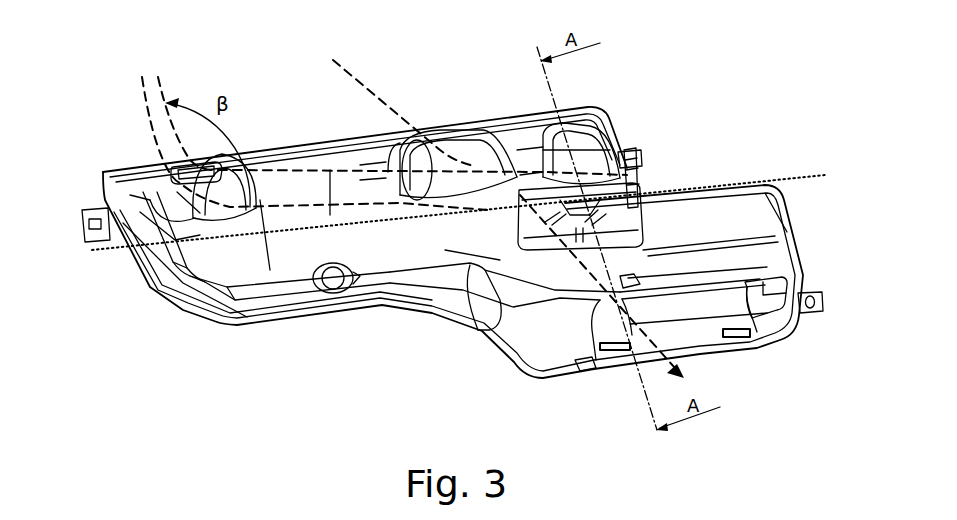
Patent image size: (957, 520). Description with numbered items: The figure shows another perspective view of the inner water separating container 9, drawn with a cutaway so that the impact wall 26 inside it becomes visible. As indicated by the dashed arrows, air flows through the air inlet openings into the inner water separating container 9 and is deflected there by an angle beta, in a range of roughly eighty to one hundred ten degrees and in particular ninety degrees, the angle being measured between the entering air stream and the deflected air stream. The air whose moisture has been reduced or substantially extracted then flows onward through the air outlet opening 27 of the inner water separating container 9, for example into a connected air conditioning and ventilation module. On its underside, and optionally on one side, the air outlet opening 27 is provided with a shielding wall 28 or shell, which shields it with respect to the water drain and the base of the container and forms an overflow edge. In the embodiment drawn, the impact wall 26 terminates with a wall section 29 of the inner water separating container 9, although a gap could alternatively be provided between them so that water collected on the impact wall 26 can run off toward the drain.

The inner water separating container 9 is at (294, 121).
The impact wall 26 is at (630, 212).
The air outlet opening 27 is at (581, 370).
The shielding wall 28 is at (768, 268).
The wall section 29 is at (637, 178).